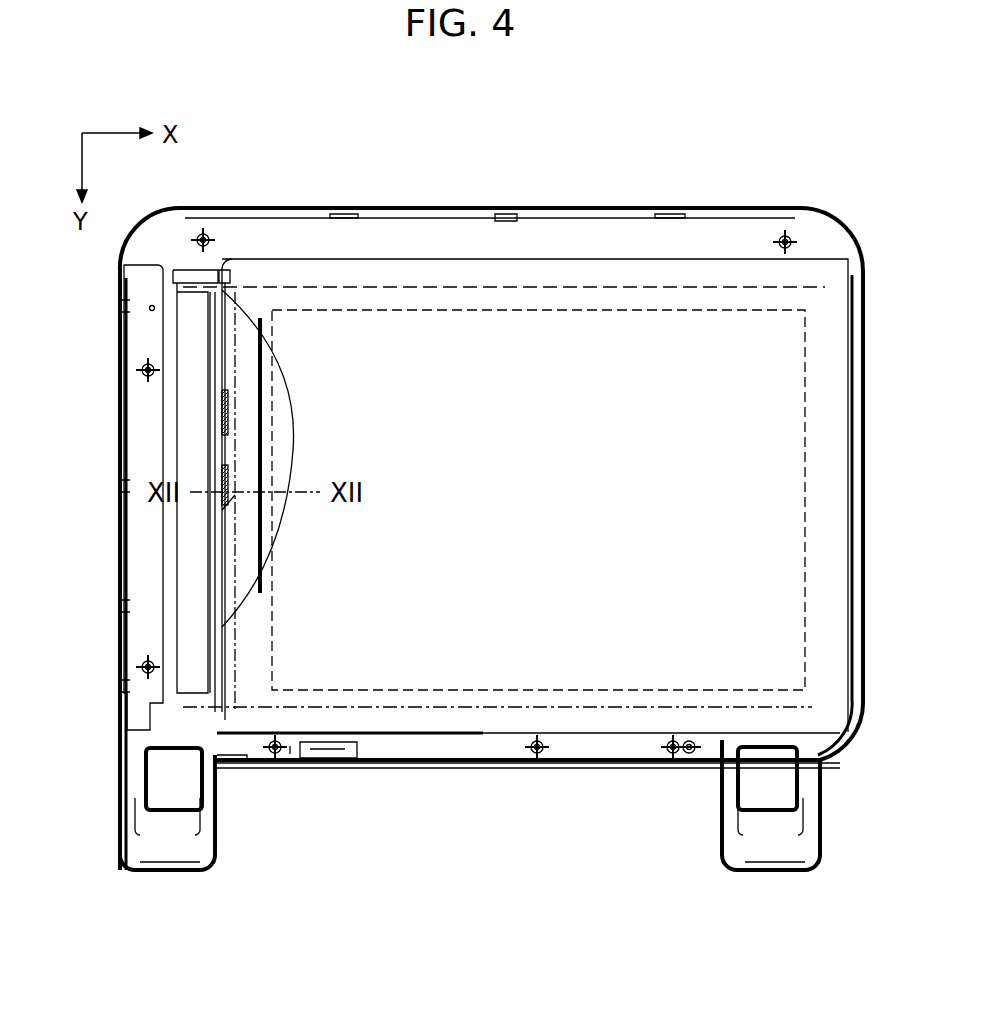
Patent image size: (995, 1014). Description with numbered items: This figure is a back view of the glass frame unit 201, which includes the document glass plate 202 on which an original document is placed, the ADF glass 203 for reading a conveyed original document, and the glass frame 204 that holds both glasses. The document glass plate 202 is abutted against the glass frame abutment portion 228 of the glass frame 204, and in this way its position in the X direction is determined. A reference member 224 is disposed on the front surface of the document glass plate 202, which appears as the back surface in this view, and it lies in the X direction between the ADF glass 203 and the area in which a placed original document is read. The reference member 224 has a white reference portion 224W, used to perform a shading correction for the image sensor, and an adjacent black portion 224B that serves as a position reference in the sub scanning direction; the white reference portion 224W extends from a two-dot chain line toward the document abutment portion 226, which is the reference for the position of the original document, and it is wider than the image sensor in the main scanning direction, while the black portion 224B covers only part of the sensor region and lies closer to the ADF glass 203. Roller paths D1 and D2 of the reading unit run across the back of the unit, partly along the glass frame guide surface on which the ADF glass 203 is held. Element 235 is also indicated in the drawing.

The glass frame unit 201 is at (852, 205).
The document glass plate 202 is at (615, 272).
The ADF glass 203 is at (185, 448).
The glass frame 204 is at (705, 243).
The reference member 224 is at (240, 317).
The black portion 224B is at (225, 395).
The white reference portion 224W is at (247, 525).
The document abutment portion 226 is at (262, 448).
The glass frame abutment portion 228 is at (222, 290).
The reading window 235 is at (815, 345).
The roller path D1 is at (752, 287).
The roller path D2 is at (812, 707).